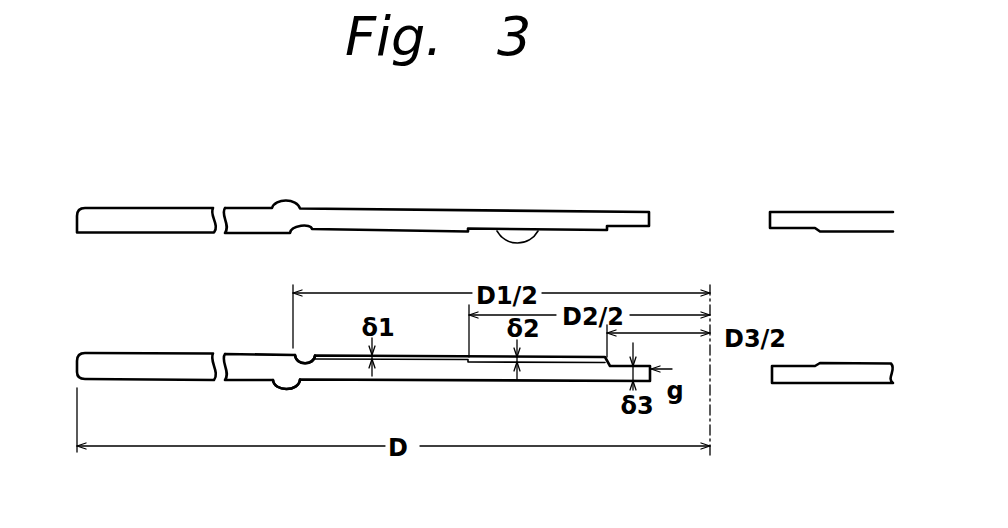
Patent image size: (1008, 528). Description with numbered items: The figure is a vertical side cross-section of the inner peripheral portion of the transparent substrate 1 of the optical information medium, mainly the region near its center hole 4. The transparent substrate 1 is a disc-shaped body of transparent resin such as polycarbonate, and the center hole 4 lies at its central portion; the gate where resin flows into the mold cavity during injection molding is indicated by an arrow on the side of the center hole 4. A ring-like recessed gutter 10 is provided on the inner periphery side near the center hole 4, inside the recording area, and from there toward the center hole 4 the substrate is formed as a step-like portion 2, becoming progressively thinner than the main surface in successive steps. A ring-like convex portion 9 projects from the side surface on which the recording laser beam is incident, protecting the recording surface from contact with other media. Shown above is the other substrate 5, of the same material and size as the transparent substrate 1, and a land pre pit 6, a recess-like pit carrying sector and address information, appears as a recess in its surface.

The transparent substrate 1 is at (148, 365).
The step-like portion 2 is at (492, 357).
The center hole 4 is at (706, 218).
The substrate 5 is at (466, 220).
The land pre pit 6 is at (540, 232).
The ring-like convex portion 9 is at (288, 390).
The recessed gutter 10 is at (309, 357).